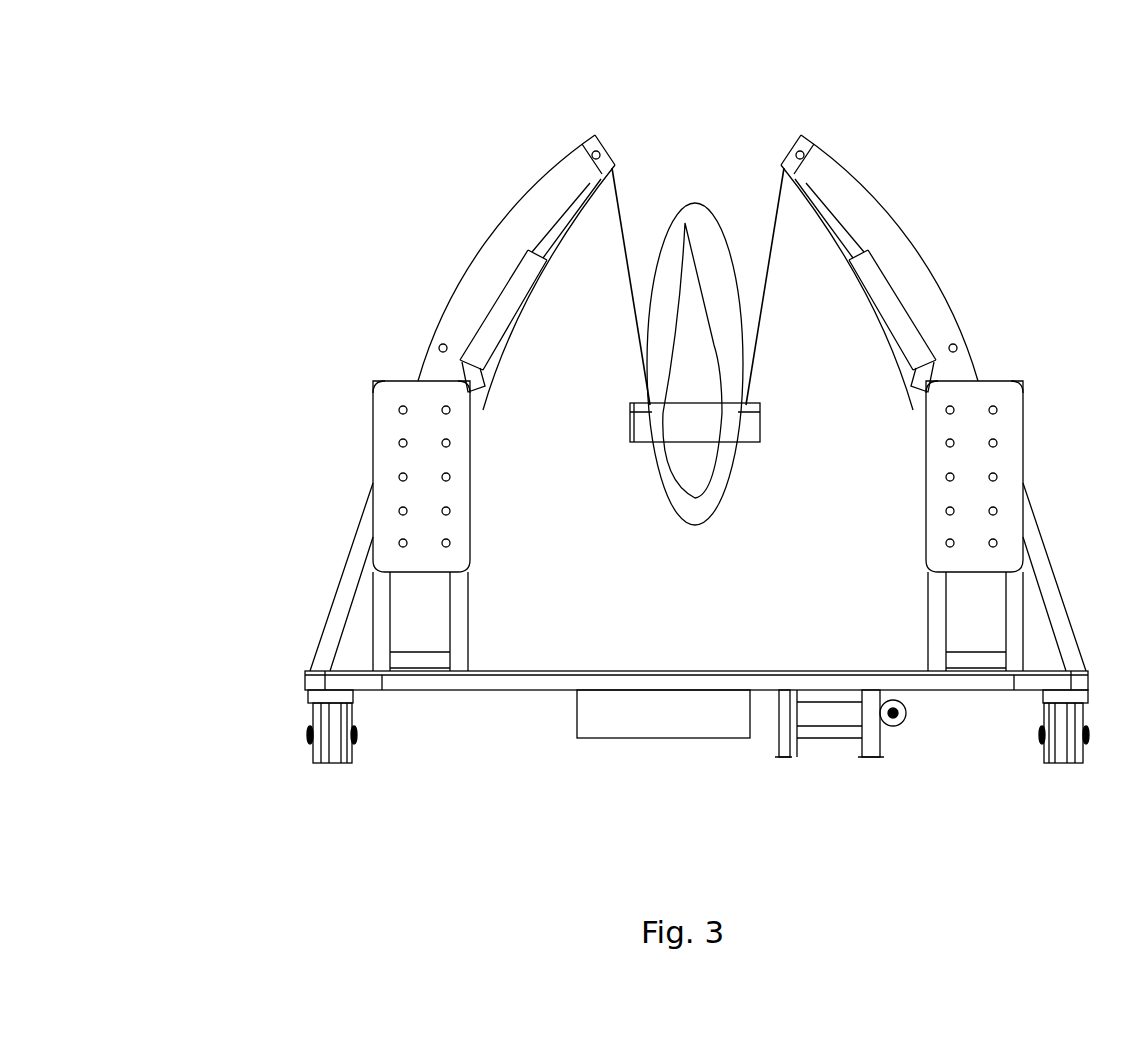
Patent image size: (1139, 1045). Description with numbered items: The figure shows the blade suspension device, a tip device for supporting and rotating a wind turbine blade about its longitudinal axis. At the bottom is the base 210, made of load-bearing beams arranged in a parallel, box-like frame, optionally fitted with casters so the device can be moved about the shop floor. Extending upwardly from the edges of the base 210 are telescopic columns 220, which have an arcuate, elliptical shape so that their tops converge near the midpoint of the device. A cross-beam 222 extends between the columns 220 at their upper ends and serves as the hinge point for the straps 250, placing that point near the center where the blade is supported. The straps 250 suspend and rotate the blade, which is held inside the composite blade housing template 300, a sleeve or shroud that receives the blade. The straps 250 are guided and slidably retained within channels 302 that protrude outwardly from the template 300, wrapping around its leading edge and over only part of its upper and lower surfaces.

The base 210 is at (298, 684).
The telescopic columns 220 is at (957, 300).
The cross-beam 222 is at (590, 155).
The straps 250 is at (622, 295).
The composite blade housing template 300 is at (688, 197).
The channels 302 is at (750, 443).